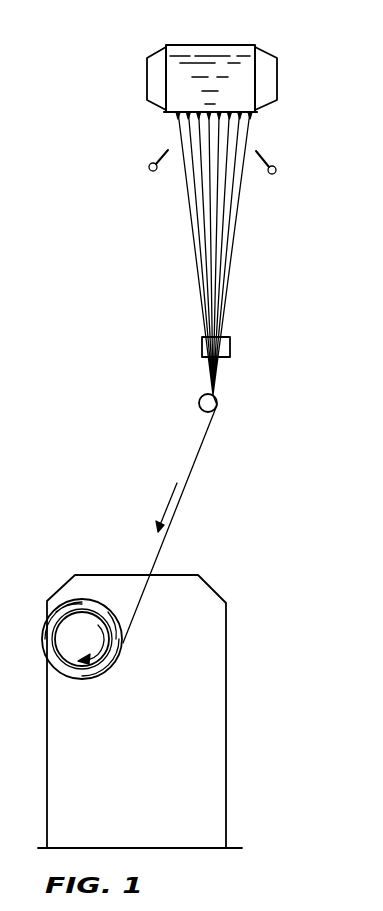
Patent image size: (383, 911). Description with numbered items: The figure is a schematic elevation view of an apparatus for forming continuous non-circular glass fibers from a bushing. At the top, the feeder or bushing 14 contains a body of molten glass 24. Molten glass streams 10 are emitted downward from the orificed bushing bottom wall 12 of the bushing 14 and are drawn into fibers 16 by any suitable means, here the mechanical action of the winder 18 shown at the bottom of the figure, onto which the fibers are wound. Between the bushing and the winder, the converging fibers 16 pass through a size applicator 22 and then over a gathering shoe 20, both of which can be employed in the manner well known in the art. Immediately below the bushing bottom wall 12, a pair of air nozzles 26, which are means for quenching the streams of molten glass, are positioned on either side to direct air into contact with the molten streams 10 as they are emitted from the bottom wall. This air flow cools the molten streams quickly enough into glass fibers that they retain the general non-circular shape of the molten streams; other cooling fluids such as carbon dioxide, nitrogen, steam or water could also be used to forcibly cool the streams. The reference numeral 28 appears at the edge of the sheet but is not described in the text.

The molten glass streams 10 is at (181, 253).
The orificed bushing bottom wall 12 is at (254, 113).
The bushing 14 is at (163, 42).
The fibers 16 is at (204, 282).
The winder 18 is at (128, 575).
The gathering shoe 20 is at (208, 394).
The size applicator 22 is at (204, 337).
The body of molten glass 24 is at (212, 57).
The air nozzles 26 is at (149, 166).
The reference element 28 is at (246, 910).